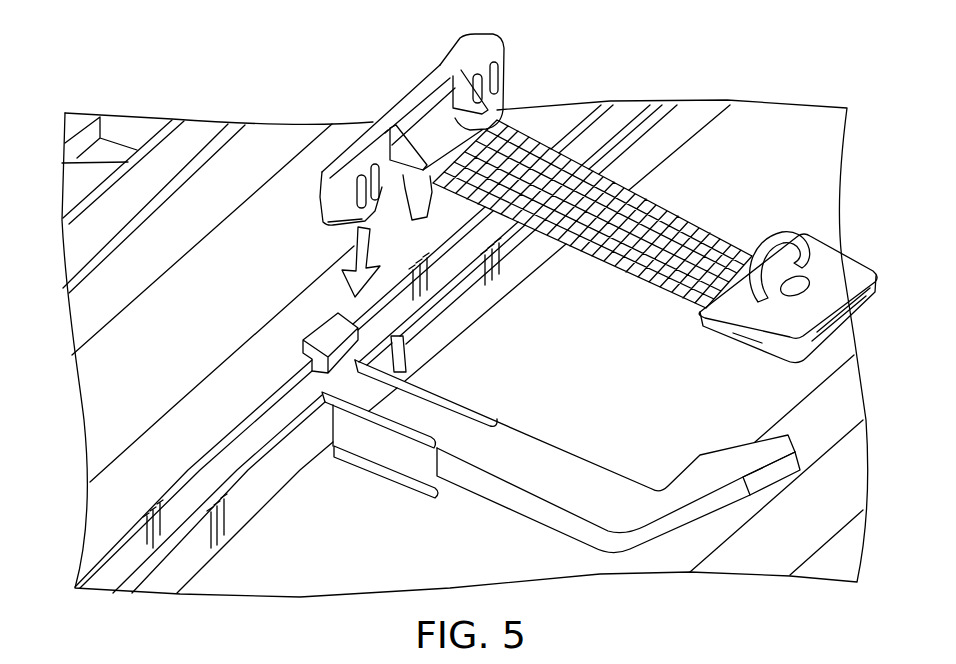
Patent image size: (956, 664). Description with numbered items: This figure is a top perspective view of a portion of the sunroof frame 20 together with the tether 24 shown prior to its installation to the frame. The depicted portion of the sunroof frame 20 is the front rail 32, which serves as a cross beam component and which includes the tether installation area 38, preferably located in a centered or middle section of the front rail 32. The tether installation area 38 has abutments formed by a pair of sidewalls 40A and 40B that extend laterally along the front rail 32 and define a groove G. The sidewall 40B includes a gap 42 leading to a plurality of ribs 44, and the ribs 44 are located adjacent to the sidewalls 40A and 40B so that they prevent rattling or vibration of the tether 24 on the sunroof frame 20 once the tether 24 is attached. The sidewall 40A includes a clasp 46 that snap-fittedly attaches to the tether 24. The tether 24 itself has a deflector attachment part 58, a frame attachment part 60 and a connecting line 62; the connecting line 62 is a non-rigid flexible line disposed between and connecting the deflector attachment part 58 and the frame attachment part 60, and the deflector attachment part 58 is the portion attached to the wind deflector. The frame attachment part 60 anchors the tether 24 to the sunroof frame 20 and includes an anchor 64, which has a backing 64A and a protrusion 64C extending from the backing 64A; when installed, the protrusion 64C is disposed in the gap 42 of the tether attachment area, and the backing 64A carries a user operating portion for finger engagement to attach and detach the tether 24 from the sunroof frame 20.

The sunroof frame 20 is at (97, 194).
The tether 24 is at (663, 60).
The front rail 32 is at (157, 243).
The tether installation area 38 is at (273, 362).
The sidewall 40A is at (225, 438).
The sidewall 40B is at (253, 482).
The gap 42 is at (350, 427).
The ribs 44 is at (405, 419).
The clasp 46 is at (327, 343).
The deflector attachment part 58 is at (858, 264).
The frame attachment part 60 is at (463, 42).
The connecting line 62 is at (713, 240).
The anchor 64 is at (333, 168).
The backing 64A is at (322, 198).
The protrusion 64C is at (426, 198).
The groove G is at (397, 327).